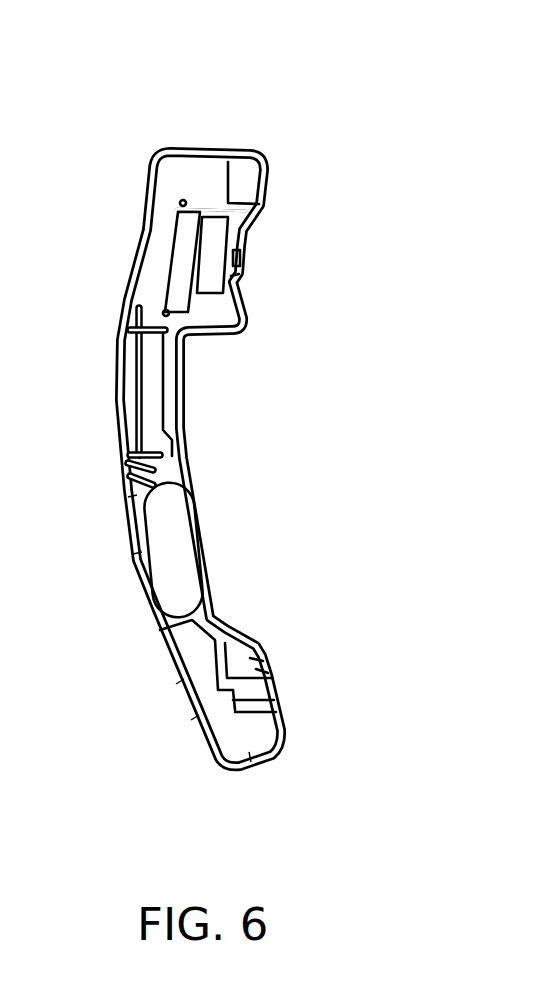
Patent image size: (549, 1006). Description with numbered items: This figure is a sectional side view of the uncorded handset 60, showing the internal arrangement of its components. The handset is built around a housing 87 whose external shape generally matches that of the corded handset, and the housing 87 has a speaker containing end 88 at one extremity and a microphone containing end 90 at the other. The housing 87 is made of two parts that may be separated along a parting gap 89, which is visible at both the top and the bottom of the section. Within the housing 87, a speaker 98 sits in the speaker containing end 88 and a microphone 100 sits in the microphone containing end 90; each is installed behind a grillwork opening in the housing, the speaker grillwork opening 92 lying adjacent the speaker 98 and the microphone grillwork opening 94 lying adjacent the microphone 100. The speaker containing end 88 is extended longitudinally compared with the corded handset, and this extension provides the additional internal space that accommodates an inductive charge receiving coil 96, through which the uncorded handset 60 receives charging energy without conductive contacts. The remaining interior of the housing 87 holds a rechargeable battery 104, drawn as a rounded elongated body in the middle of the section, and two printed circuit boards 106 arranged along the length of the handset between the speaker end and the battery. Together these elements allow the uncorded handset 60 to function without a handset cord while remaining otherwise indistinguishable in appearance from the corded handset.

The uncorded handset 60 is at (191, 88).
The housing 87 is at (182, 680).
The speaker containing end 88 is at (238, 148).
The parting gap 89 is at (198, 148).
The microphone containing end 90 is at (272, 752).
The speaker grillwork opening 92 is at (238, 280).
The microphone grillwork opening 94 is at (270, 675).
The inductive charge receiving coil 96 is at (255, 188).
The speaker 98 is at (240, 257).
The microphone 100 is at (238, 667).
The rechargeable battery 104 is at (163, 538).
The printed circuit boards 106 is at (125, 365).